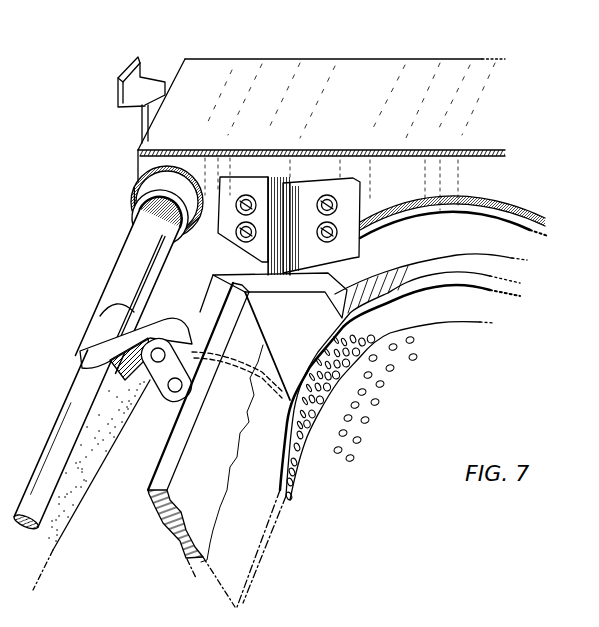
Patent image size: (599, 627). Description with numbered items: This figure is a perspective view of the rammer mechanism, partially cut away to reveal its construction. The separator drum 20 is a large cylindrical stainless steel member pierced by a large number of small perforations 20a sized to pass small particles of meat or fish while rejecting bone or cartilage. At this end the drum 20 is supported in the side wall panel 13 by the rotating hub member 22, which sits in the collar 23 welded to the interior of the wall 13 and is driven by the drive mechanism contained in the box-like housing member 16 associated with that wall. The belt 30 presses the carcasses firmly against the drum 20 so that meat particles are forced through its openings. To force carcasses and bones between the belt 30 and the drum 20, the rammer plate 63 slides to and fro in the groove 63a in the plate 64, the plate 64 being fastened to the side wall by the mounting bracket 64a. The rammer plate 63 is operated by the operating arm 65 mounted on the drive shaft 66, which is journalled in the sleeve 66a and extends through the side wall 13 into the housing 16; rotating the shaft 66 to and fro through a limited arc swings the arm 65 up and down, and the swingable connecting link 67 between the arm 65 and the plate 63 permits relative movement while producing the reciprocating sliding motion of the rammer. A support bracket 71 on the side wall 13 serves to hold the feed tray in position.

The housing member 16 is at (368, 60).
The side wall panel 13 is at (313, 165).
The support bracket 71 is at (118, 93).
The mounting bracket 64a is at (280, 200).
The collar 23 is at (512, 214).
The rotating hub member 22 is at (457, 319).
The plate 64 is at (315, 330).
The groove 63a is at (142, 257).
The sleeve 66a is at (133, 280).
The drive shaft 66 is at (73, 400).
The belt 30 is at (107, 443).
The operating arm 65 is at (113, 337).
The connecting link 67 is at (158, 402).
The rammer plate 63 is at (230, 428).
The separator drum 20 is at (363, 480).
The perforation 20a is at (360, 437).